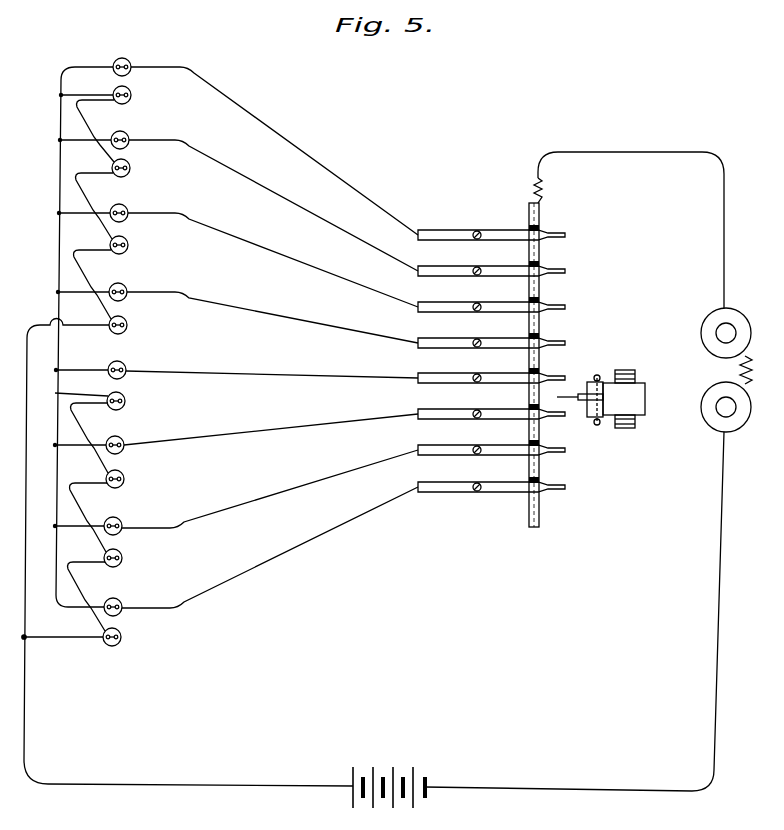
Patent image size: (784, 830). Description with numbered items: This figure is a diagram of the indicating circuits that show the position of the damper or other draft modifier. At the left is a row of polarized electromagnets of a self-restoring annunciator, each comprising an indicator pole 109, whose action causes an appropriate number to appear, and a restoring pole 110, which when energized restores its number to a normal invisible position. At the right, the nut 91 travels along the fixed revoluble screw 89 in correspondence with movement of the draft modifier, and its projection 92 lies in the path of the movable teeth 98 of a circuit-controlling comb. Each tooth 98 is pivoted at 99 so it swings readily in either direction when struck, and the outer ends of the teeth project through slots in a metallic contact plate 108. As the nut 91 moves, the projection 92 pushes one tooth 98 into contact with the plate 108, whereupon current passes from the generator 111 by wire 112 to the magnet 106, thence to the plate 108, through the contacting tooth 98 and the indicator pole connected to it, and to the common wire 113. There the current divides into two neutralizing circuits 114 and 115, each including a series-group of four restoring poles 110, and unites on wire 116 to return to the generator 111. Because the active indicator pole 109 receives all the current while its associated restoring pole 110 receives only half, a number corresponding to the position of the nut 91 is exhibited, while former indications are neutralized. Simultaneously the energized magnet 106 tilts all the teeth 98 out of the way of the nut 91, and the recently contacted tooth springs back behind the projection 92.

The fixed revoluble screw 89 is at (638, 372).
The nut 91 is at (635, 403).
The projection 92 is at (568, 400).
The movable teeth 98 is at (568, 309).
The pivot 99 is at (478, 309).
The magnet 106 is at (703, 327).
The metallic contact plate 108 is at (540, 213).
The indicator pole 109 is at (131, 63).
The restoring pole 110 is at (131, 95).
The generator 111 is at (386, 766).
The wire 112 is at (716, 531).
The common wire 113 is at (58, 260).
The neutralizing circuit 114 is at (78, 116).
The neutralizing circuit 115 is at (83, 431).
The wire 116 is at (24, 678).